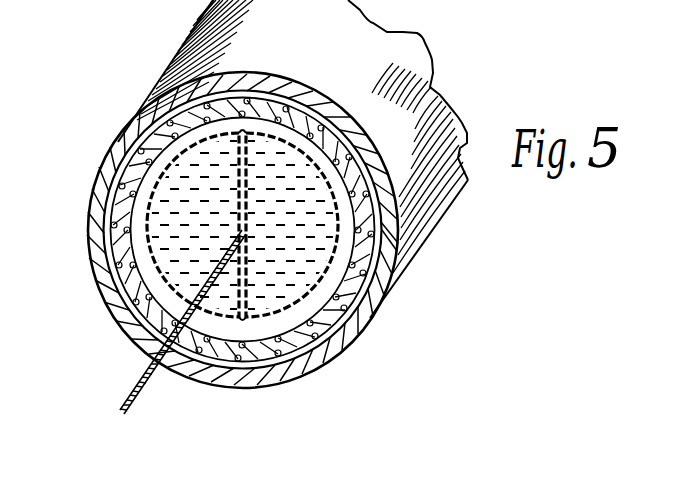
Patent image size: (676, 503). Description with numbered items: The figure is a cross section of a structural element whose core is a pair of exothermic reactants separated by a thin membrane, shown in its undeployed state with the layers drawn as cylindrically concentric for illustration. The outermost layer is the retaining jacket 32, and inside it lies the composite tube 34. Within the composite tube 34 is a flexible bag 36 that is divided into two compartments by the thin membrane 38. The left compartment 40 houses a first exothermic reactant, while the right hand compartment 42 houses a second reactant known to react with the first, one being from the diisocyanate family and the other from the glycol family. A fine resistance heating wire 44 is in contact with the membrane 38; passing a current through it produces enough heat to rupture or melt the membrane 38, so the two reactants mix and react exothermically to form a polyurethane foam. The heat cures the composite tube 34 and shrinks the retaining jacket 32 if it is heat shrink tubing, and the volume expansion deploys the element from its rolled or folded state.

The retaining jacket 32 is at (110, 153).
The composite tube 34 is at (110, 221).
The flexible bag 36 is at (303, 313).
The thin membrane 38 is at (246, 287).
The left compartment 40 is at (170, 250).
The right hand compartment 42 is at (303, 222).
The heating wire 44 is at (141, 393).